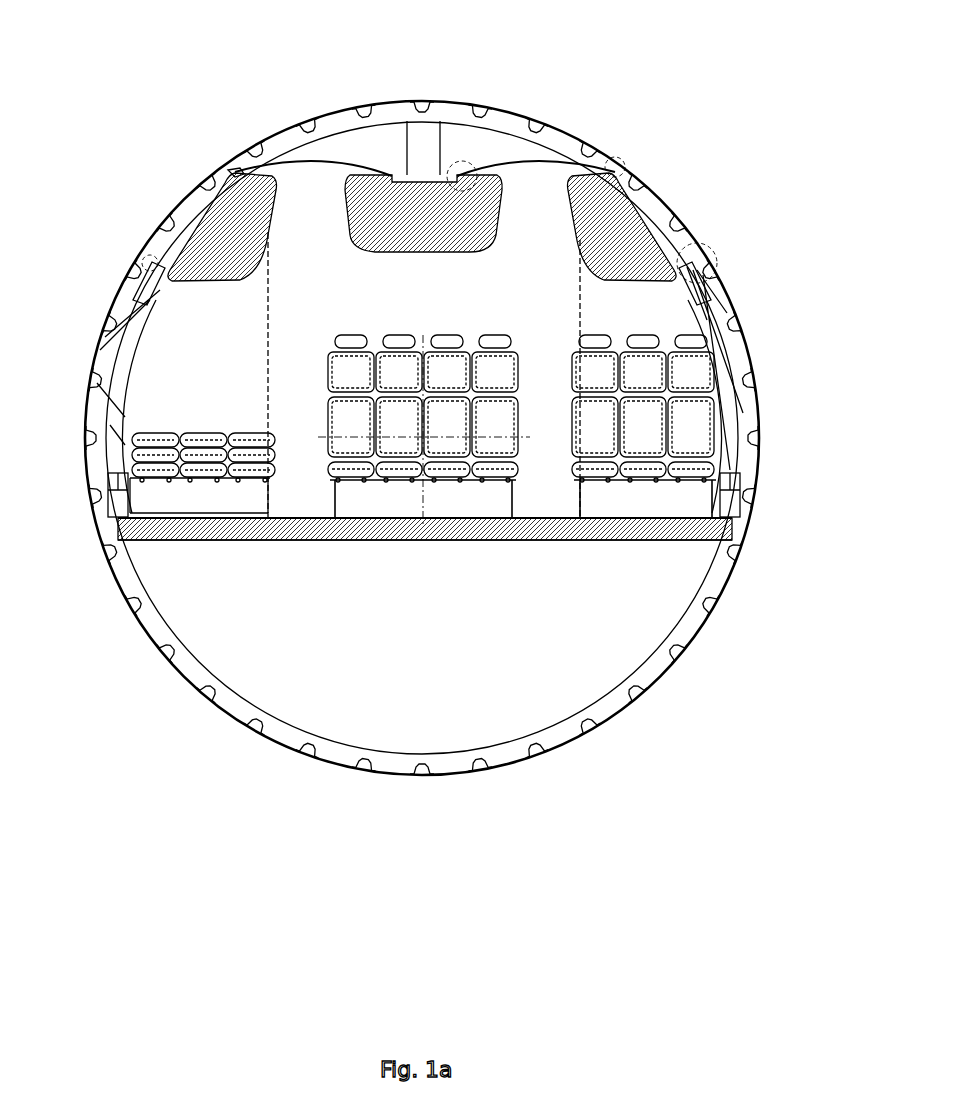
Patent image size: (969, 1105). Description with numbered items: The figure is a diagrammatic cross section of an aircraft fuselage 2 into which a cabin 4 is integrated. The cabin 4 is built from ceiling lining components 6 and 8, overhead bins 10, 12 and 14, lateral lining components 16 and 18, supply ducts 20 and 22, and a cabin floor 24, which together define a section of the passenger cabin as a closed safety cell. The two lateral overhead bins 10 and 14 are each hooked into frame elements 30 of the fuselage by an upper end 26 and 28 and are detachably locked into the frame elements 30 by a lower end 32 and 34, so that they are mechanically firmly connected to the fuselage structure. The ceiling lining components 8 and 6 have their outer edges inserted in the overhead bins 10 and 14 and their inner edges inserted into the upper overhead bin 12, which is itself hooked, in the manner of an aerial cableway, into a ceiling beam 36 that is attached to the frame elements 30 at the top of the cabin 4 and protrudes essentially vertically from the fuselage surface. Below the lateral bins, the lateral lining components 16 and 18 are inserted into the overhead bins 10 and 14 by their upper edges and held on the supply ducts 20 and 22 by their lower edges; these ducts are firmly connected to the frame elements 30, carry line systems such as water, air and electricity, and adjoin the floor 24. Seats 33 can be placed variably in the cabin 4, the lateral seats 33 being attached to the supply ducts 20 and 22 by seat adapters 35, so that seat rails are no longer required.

The aircraft fuselage 2 is at (550, 112).
The cabin 4 is at (444, 305).
The ceiling lining component 6 is at (588, 162).
The ceiling lining component 8 is at (352, 148).
The lateral overhead bin 10 is at (236, 228).
The upper overhead bin 12 is at (440, 165).
The lateral overhead bin 14 is at (683, 243).
The lateral lining component 16 is at (138, 297).
The lateral lining component 18 is at (706, 293).
The supply duct 20 is at (733, 497).
The supply duct 22 is at (118, 508).
The cabin floor 24 is at (686, 542).
The upper end 26 is at (250, 173).
The upper end 28 is at (622, 172).
The frame element 30 is at (748, 468).
The lower end 32 is at (165, 263).
The seat 33 is at (210, 472).
The lower end 34 is at (712, 274).
The seat adapter 35 is at (180, 540).
The ceiling beam 36 is at (427, 145).